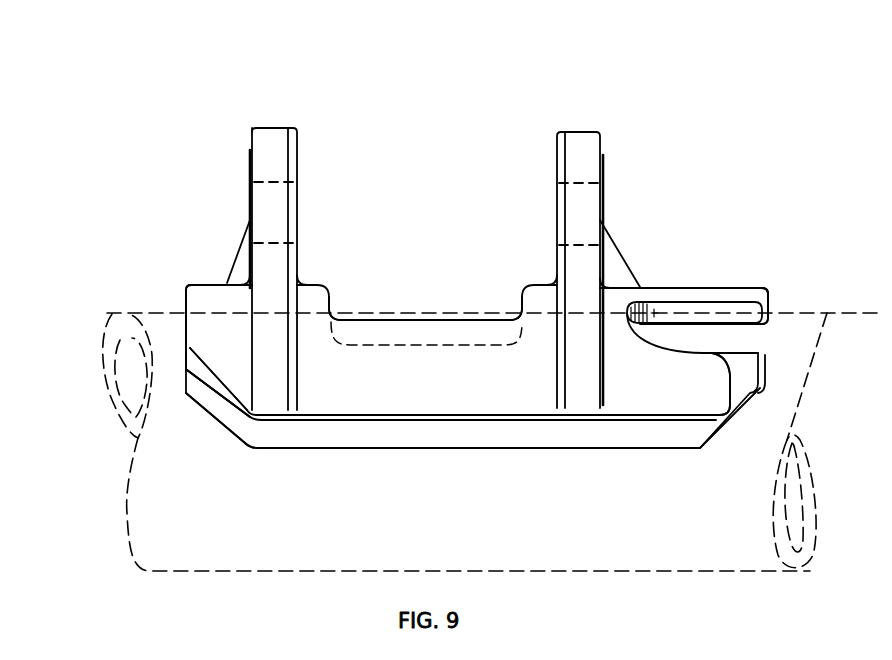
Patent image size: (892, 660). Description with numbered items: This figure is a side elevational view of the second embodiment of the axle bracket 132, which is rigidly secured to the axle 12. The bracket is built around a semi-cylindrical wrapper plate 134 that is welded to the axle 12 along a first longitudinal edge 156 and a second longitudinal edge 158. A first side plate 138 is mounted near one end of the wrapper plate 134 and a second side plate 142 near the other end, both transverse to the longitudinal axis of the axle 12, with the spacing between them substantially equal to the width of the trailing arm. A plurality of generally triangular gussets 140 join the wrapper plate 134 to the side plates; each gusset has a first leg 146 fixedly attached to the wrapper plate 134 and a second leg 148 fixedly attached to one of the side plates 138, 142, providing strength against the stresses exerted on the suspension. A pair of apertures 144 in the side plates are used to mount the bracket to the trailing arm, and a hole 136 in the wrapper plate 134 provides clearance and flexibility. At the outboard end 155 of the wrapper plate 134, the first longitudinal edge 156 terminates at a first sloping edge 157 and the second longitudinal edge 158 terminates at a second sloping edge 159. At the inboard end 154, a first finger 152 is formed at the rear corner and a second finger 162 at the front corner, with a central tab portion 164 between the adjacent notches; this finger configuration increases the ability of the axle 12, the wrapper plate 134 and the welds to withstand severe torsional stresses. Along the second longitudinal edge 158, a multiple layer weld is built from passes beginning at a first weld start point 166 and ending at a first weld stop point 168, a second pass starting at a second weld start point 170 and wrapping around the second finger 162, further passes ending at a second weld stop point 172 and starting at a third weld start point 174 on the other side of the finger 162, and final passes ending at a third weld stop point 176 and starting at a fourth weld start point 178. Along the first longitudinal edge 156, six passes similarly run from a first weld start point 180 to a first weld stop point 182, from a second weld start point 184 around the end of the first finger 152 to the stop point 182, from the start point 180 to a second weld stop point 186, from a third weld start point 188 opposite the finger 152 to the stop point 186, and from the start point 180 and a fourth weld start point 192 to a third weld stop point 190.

The axle 12 is at (133, 512).
The axle bracket 132 is at (155, 173).
The wrapper plate 134 is at (311, 295).
The hole 136 is at (428, 302).
The first side plate 138 is at (590, 148).
The gussets 140 is at (240, 272).
The second side plate 142 is at (273, 145).
The apertures 144 is at (276, 208).
The first leg 146 is at (184, 291).
The second leg 148 is at (638, 232).
The first finger 152 is at (700, 395).
The inboard end 154 is at (768, 303).
The outboard end 155 is at (184, 297).
The first longitudinal edge 156 is at (470, 420).
The first sloping edge 157 is at (233, 407).
The second longitudinal edge 158 is at (303, 450).
The second sloping edge 159 is at (247, 443).
The second finger 162 is at (745, 390).
The central tab portion 164 is at (708, 288).
The first weld start point 166 is at (200, 400).
The first weld stop point 168 is at (500, 452).
The second weld start point 170 is at (758, 352).
The second weld stop point 172 is at (362, 452).
The third weld start point 174 is at (675, 452).
The third weld stop point 176 is at (440, 452).
The fourth weld start point 178 is at (628, 452).
The first weld start point 180 is at (199, 378).
The first weld stop point 182 is at (365, 410).
The second weld start point 184 is at (705, 352).
The second weld stop point 186 is at (488, 410).
The third weld start point 188 is at (669, 410).
The third weld stop point 190 is at (440, 410).
The fourth weld start point 192 is at (625, 410).